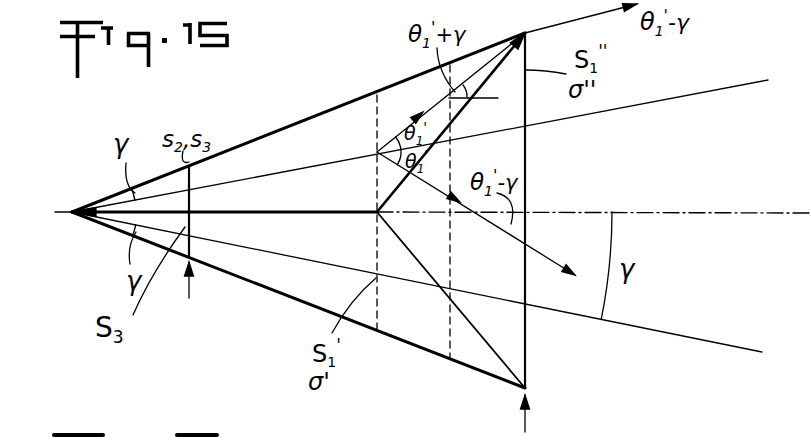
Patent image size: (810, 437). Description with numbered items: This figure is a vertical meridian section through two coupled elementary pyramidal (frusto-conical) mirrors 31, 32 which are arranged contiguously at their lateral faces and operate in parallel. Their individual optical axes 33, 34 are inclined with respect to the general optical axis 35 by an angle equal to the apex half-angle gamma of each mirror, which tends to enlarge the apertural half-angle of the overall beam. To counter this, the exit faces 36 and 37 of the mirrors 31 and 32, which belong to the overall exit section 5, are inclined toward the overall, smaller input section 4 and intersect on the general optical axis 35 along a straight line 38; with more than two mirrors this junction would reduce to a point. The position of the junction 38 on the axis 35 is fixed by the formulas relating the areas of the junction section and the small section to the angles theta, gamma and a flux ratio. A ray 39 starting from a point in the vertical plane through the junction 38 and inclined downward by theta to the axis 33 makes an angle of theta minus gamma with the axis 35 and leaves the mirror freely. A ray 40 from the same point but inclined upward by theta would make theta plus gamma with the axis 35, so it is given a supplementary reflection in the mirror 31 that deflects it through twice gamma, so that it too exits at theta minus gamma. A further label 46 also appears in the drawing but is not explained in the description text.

The overall input section 4 is at (177, 251).
The overall exit section 5 is at (526, 416).
The elementary pyramidal mirror 31 is at (271, 134).
The elementary pyramidal mirror 32 is at (267, 276).
The optical axis 33 is at (632, 118).
The optical axis 34 is at (569, 312).
The general optical axis 35 is at (690, 214).
The exit face 36 is at (495, 63).
The exit face 37 is at (483, 342).
The straight-line of intersection 38 is at (372, 221).
The ray 39 is at (374, 157).
The ray 40 is at (432, 107).
The reference line 46 is at (692, 423).